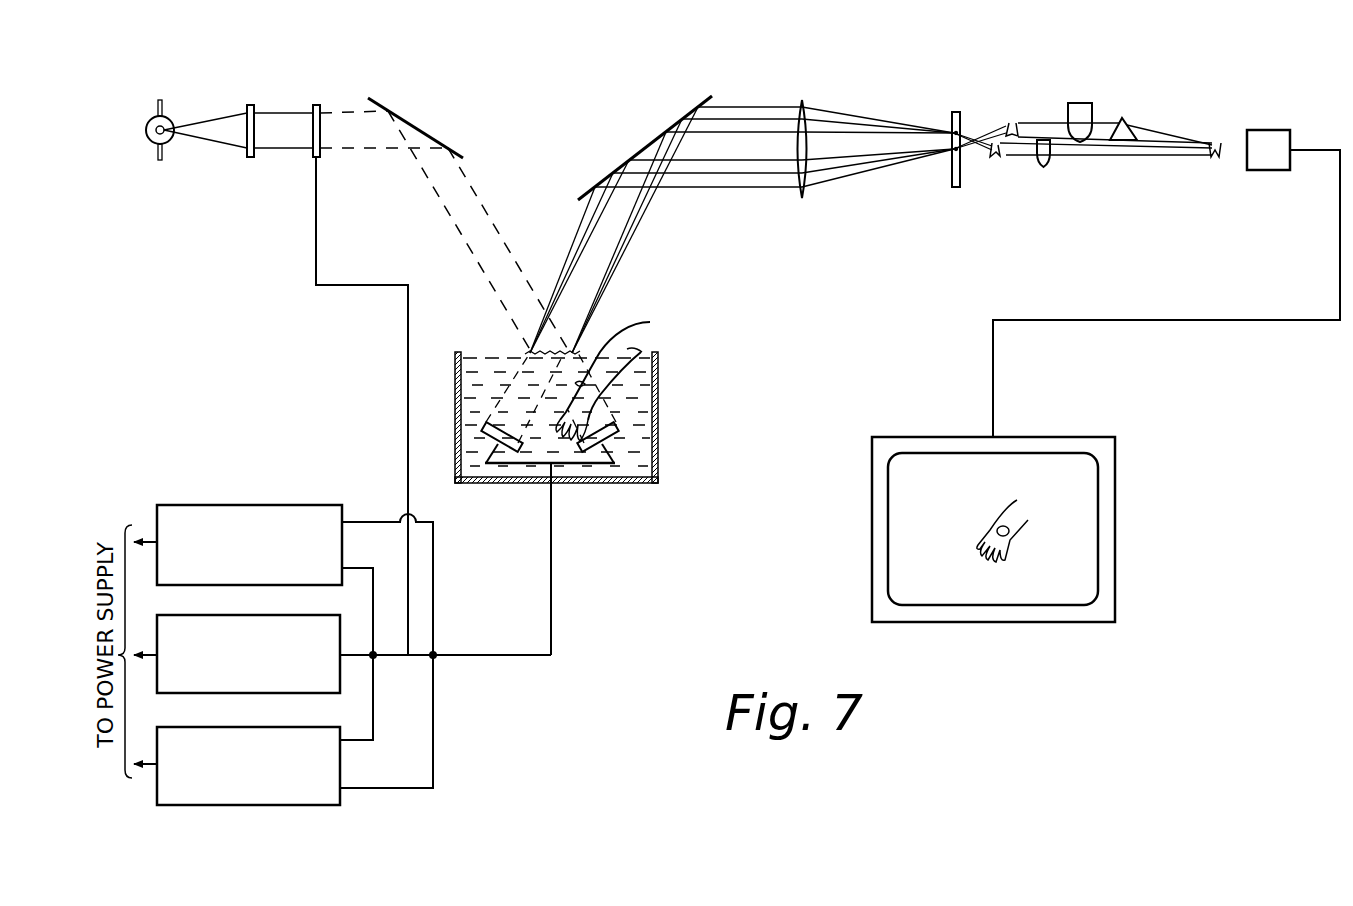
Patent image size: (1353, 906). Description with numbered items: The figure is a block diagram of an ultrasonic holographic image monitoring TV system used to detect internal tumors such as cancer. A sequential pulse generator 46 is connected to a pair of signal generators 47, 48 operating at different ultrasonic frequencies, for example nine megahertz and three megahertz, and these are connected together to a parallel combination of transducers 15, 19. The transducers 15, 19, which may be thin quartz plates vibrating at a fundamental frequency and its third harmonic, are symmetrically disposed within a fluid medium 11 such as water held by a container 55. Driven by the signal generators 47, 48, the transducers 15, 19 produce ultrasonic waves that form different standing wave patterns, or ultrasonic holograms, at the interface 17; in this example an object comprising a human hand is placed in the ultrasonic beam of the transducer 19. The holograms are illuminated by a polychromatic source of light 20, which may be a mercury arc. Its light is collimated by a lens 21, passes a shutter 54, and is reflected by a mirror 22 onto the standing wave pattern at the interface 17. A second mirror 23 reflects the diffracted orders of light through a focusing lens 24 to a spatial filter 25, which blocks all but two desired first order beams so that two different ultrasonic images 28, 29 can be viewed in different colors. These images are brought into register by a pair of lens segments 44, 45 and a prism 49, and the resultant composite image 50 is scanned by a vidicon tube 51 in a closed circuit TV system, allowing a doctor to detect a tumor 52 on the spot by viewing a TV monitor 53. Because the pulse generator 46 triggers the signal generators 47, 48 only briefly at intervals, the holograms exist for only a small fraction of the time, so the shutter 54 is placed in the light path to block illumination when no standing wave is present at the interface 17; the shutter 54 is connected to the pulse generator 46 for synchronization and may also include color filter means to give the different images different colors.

The polychromatic source of light 20 is at (150, 120).
The lens 21 is at (249, 106).
The shutter 54 is at (321, 150).
The mirror 22 is at (410, 122).
The mirror 23 is at (622, 165).
The focusing lens 24 is at (806, 105).
The spatial filter 25 is at (952, 115).
The ultrasonic image 28 is at (1012, 122).
The ultrasonic image 29 is at (995, 157).
The lens segment 44 is at (1050, 160).
The lens segment 45 is at (1091, 118).
The prism 49 is at (1125, 120).
The composite image 50 is at (1215, 158).
The vidicon tube 51 is at (1275, 130).
The interface 17 is at (492, 352).
The fluid medium 11 is at (493, 392).
The transducer 15 is at (484, 436).
The transducer 19 is at (614, 442).
The container 55 is at (660, 373).
The TV monitor 53 is at (1114, 470).
The tumor 52 is at (1017, 533).
The signal generator 47 is at (248, 505).
The sequential pulse generator 46 is at (262, 608).
The signal generator 48 is at (268, 720).